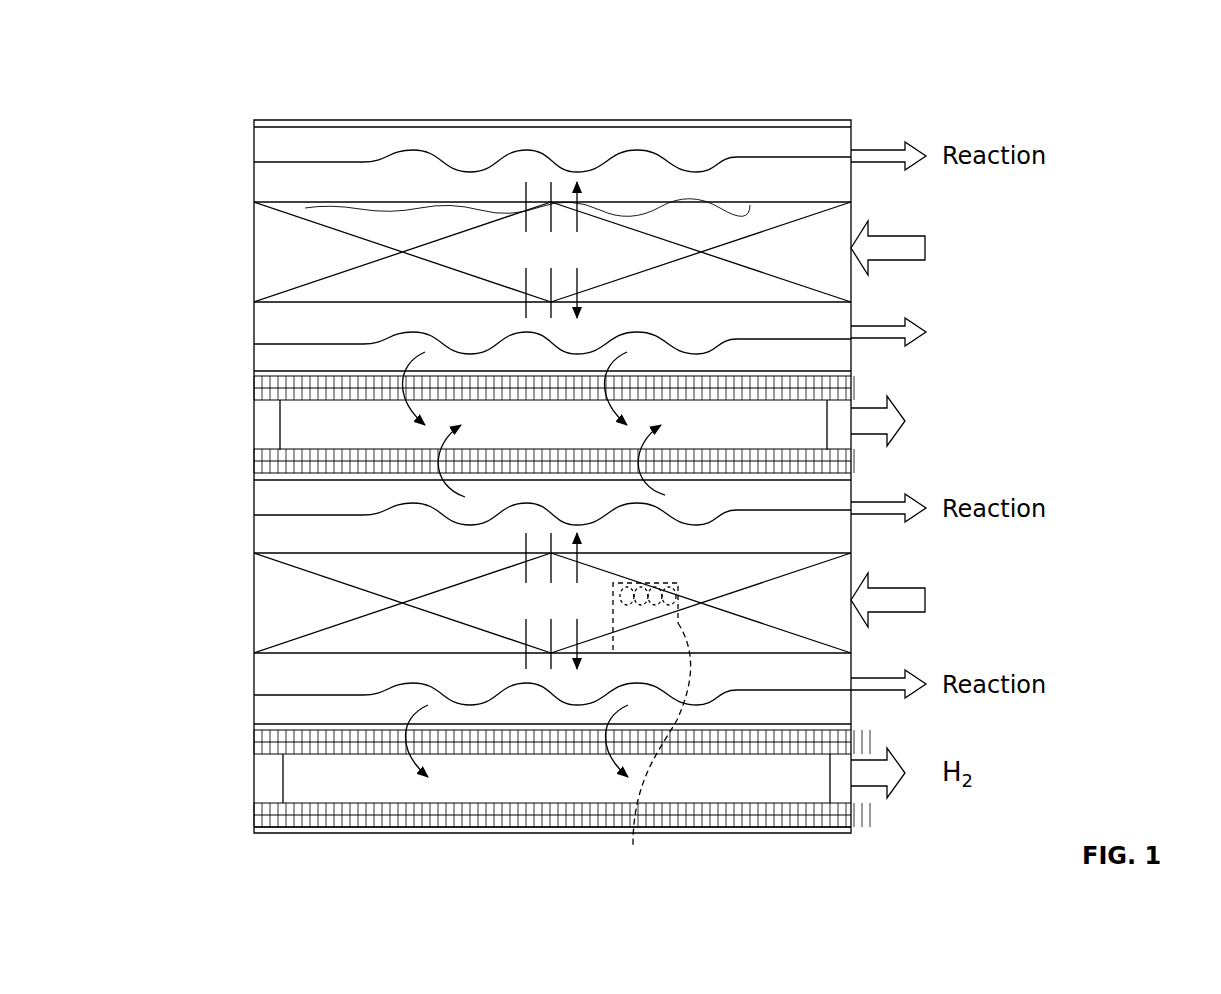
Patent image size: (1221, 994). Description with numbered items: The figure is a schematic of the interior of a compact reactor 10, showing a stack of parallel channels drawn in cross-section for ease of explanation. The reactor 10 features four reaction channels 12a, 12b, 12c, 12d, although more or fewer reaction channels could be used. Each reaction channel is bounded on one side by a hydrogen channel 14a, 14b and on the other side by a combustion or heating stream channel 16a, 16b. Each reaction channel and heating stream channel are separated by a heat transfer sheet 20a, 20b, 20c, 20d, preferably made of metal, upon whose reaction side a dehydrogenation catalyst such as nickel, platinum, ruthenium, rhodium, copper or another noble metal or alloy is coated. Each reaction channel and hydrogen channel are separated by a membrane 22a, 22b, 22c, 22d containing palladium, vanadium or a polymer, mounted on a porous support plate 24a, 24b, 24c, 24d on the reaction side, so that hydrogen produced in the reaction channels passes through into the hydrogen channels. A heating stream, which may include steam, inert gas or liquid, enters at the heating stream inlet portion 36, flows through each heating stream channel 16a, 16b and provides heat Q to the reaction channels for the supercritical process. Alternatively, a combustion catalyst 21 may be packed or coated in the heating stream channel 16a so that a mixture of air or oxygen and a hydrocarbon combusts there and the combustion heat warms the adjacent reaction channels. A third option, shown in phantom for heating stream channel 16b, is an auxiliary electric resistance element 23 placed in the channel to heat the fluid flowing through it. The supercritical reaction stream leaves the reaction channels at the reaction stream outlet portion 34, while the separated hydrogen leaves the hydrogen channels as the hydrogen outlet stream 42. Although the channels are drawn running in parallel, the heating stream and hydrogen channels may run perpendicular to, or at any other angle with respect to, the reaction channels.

The reactor 10 is at (231, 85).
The reaction channel 12a is at (258, 177).
The reaction channel 12b is at (258, 361).
The reaction channel 12c is at (258, 539).
The reaction channel 12d is at (258, 714).
The hydrogen channel 14a is at (283, 430).
The hydrogen channel 14b is at (285, 786).
The heating stream channel 16a is at (258, 254).
The heating stream channel 16b is at (258, 599).
The heat transfer sheet 20a is at (824, 200).
The heat transfer sheet 20b is at (824, 304).
The heat transfer sheet 20c is at (830, 551).
The heat transfer sheet 20d is at (838, 655).
The combustion catalyst 21 is at (688, 200).
The membrane 22a is at (824, 369).
The membrane 22b is at (824, 482).
The membrane 22c is at (838, 721).
The membrane 22d is at (792, 832).
The resistance element 23 is at (652, 727).
The porous support plate 24a is at (852, 386).
The porous support plate 24b is at (852, 458).
The porous support plate 24c is at (853, 746).
The porous support plate 24d is at (853, 810).
The outlet portion of the reaction stream 34 is at (1052, 336).
The inlet portion of the heating stream 36 is at (1045, 248).
The hydrogen outlet stream 42 is at (982, 423).